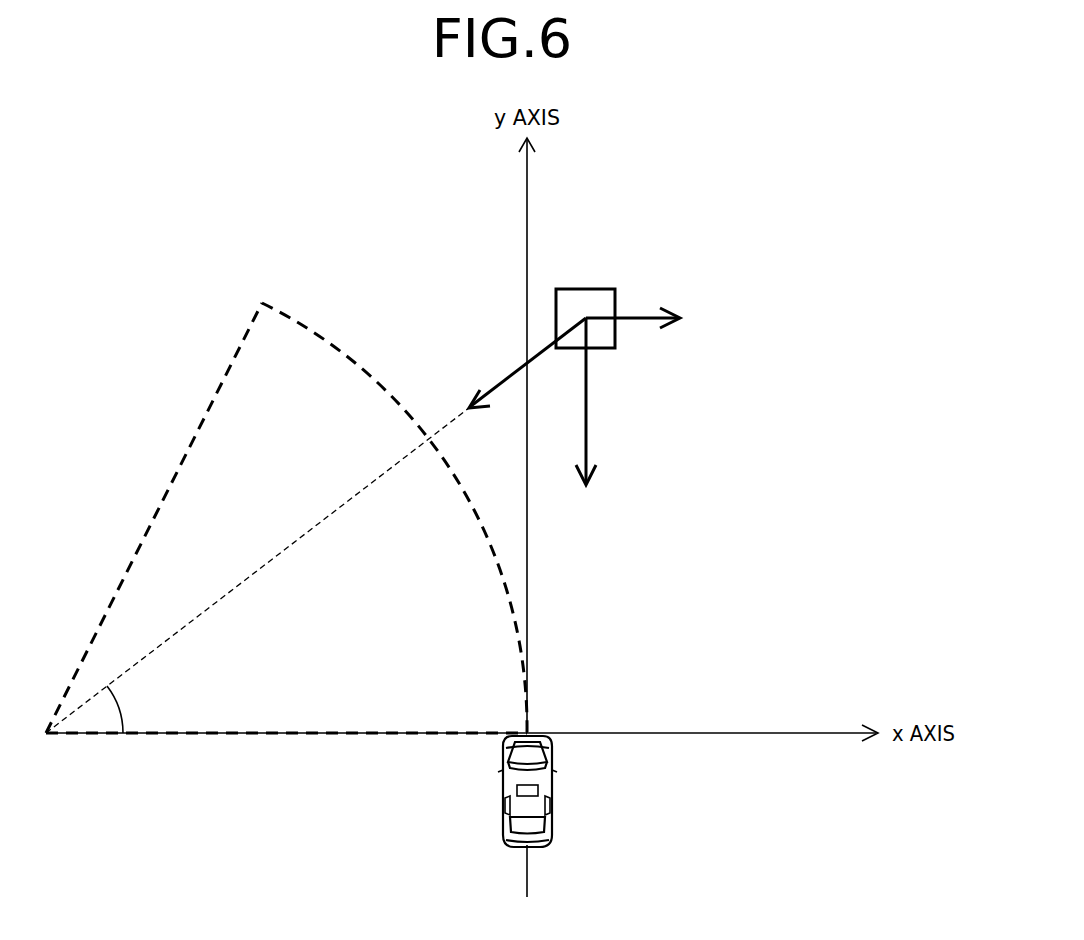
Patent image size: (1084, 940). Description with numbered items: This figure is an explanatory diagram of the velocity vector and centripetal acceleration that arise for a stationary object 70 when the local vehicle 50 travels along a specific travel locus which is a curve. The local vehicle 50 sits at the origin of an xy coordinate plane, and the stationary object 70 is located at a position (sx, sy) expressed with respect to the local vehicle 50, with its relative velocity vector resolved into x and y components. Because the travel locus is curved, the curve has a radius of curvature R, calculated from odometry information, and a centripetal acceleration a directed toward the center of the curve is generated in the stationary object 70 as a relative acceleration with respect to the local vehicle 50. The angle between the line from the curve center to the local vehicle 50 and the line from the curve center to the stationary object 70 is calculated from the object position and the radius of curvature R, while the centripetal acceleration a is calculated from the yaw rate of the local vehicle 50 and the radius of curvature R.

The stationary object 70 is at (625, 357).
The local vehicle 50 is at (503, 825).
The radius of curvature R is at (286, 518).
The centripetal acceleration a is at (527, 363).